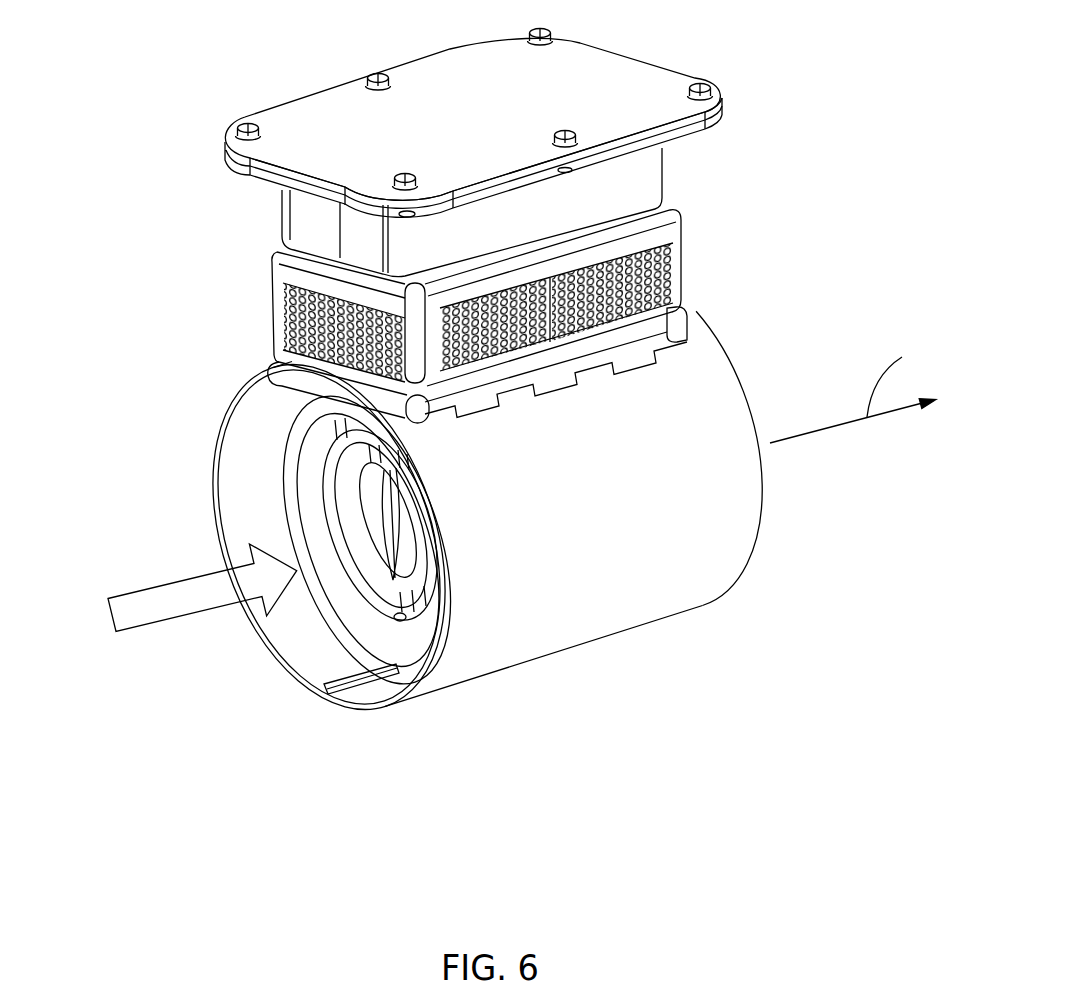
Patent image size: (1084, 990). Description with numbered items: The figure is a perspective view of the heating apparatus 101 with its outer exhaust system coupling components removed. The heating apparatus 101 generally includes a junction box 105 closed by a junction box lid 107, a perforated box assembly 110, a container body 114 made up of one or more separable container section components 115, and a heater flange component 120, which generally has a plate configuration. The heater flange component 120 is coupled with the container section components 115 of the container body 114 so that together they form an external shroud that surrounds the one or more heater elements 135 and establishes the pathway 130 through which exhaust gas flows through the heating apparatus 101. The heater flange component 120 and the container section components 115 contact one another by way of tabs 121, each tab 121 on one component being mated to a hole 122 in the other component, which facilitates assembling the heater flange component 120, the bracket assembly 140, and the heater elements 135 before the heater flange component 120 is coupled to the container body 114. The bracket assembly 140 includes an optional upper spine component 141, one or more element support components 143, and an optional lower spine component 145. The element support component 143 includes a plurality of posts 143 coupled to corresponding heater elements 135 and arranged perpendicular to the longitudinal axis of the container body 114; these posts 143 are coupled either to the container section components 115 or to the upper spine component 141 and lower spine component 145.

The heating apparatus 101 is at (152, 258).
The junction box 105 is at (647, 183).
The junction box lid 107 is at (628, 80).
The perforated box assembly 110 is at (647, 252).
The container body 114 is at (576, 656).
The container section components 115 is at (672, 600).
The heater flange component 120 is at (667, 323).
The tabs 121 is at (640, 354).
The hole 122 is at (557, 387).
The pathway 130 is at (197, 578).
The heater elements 135 is at (293, 447).
The bracket assembly 140 is at (537, 470).
The upper spine component 141 is at (428, 410).
The element support component 143 is at (410, 513).
The lower spine component 145 is at (447, 680).